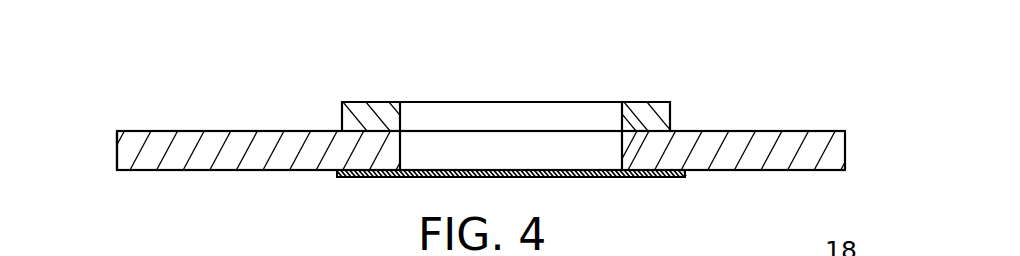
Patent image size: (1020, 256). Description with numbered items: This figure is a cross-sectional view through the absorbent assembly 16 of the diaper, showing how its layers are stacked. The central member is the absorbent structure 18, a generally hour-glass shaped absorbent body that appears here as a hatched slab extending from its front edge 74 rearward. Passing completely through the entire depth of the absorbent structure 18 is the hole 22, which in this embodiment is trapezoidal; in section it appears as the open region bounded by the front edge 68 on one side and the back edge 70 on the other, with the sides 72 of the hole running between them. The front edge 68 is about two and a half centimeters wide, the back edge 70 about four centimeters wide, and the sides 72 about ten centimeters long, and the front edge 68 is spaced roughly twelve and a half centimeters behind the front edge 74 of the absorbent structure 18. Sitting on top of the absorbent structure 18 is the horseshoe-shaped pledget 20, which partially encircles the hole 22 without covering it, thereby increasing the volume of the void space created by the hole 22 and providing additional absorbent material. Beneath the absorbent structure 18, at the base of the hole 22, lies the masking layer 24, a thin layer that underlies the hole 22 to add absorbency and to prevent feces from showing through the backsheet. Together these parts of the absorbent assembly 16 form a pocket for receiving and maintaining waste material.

The absorbent assembly 16 is at (158, 84).
The absorbent structure 18 is at (802, 141).
The pledget 20 is at (650, 101).
The hole 22 is at (607, 113).
The masking layer 24 is at (625, 160).
The front edge 68 is at (400, 125).
The back edge 70 is at (625, 158).
The sides 72 is at (545, 146).
The front edge 74 is at (117, 142).